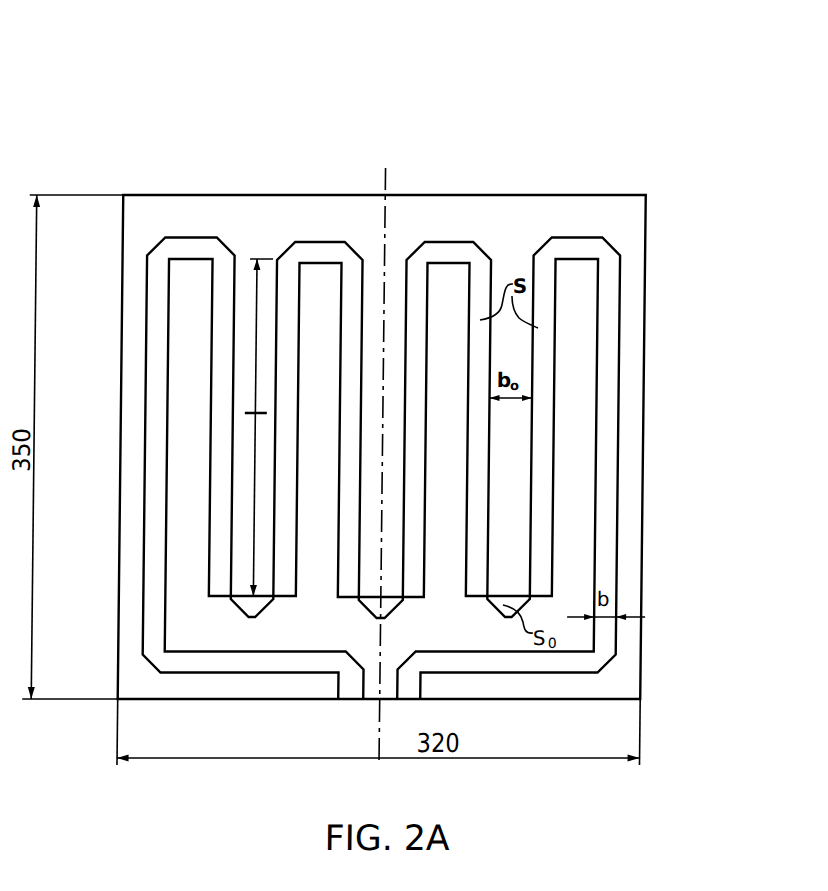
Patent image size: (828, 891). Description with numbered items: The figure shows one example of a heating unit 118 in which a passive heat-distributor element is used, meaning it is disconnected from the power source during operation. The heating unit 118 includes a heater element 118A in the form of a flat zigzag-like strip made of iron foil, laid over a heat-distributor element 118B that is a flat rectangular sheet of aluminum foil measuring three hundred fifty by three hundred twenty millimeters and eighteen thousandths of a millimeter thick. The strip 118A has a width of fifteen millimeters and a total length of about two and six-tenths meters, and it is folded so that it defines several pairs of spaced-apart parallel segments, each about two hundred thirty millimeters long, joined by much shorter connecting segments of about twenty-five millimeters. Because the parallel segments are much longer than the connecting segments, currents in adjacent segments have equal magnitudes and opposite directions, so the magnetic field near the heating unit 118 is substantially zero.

The heating unit 118 is at (433, 100).
The heater element 118A is at (570, 230).
The heat-distributor element 118B is at (524, 187).